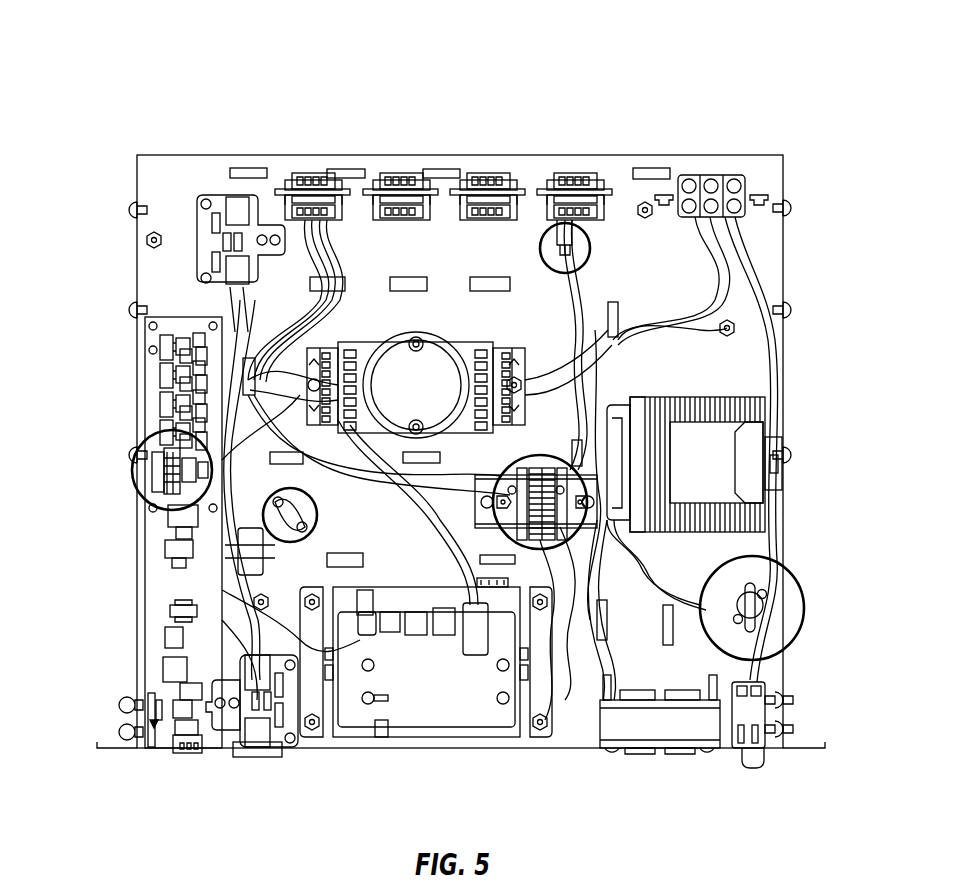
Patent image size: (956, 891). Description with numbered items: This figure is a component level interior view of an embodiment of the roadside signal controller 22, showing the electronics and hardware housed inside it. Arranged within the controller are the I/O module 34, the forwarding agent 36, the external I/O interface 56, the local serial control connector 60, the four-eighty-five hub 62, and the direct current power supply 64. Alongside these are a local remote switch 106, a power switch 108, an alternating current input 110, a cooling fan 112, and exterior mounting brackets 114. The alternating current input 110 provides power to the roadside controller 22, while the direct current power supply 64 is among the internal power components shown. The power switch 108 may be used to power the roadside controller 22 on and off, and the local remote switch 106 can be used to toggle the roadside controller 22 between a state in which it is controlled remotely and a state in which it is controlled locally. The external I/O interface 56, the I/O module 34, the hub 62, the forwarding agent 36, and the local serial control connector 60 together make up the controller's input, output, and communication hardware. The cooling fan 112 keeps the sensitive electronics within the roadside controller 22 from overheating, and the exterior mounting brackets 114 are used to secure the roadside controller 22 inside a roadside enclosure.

The roadside signal controller 22 is at (466, 451).
The external I/O interface 56 is at (485, 163).
The alternating current (AC) input 110 is at (745, 175).
The 485 hub 62 is at (152, 343).
The I/O module 34 is at (350, 352).
The direct current power supply 64 is at (735, 430).
The forwarding agent 36 is at (503, 727).
The local serial control connector 60 is at (260, 757).
The local remote switch 106 is at (190, 755).
The cooling fan 112 is at (660, 750).
The power switch 108 is at (757, 718).
The exterior mounting brackets 114 is at (100, 752).